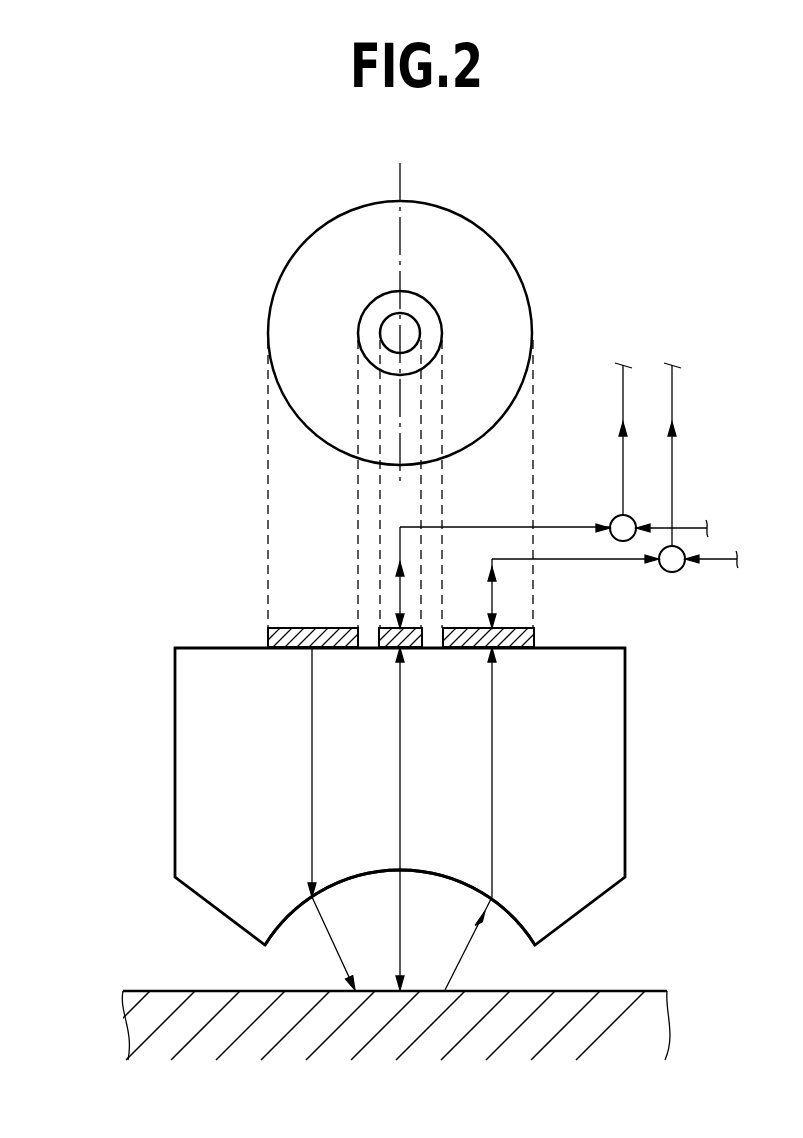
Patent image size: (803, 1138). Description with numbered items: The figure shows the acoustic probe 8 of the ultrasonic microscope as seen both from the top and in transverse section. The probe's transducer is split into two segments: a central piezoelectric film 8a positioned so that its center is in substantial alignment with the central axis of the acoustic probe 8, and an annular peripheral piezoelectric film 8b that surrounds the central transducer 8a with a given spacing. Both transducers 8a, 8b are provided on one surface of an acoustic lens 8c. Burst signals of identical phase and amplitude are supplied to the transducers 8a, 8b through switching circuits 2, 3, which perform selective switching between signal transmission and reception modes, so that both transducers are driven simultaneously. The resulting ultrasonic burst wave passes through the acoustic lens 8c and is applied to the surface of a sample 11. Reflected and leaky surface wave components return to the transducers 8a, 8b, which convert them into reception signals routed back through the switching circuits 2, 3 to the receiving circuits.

The switching circuit 2 is at (618, 523).
The switching circuit 3 is at (667, 567).
The acoustic probe 8 is at (646, 706).
The central piezoelectric film 8a is at (395, 325).
The peripheral piezoelectric film 8b is at (473, 430).
The acoustic lens 8c is at (607, 822).
The sample 11 is at (648, 993).